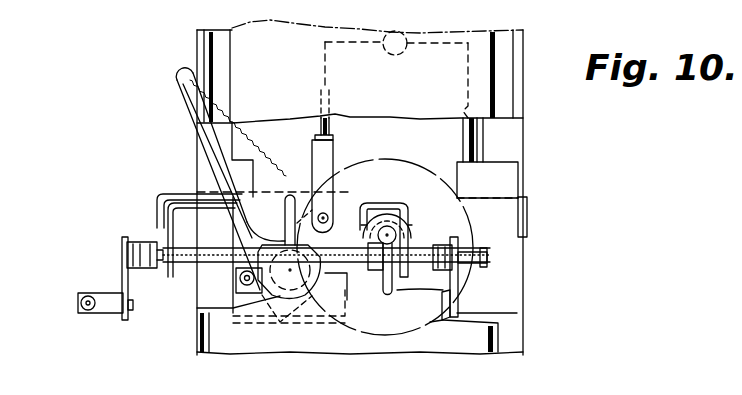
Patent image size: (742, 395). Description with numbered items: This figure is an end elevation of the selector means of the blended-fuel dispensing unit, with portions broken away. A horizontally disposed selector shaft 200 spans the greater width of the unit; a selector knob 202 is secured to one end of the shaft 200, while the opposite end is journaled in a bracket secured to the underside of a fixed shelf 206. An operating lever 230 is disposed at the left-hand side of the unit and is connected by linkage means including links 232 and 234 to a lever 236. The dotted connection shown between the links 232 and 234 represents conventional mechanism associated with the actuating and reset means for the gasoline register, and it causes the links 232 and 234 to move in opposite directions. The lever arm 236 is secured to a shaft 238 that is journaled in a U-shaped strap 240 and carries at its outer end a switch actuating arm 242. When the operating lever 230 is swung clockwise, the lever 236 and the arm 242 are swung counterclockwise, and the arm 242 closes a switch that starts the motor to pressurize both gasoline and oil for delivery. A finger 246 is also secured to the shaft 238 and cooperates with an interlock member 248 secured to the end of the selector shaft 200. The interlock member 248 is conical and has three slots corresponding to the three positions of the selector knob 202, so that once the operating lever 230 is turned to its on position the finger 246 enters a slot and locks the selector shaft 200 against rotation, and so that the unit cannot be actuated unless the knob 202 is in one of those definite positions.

The ball stud 200 is at (382, 195).
The base 202 is at (430, 328).
The housing circle 206 is at (396, 202).
The hand lever 230 is at (177, 99).
The actuating rod 232 is at (318, 122).
The guide rod 234 is at (463, 135).
The bracket 236 is at (457, 313).
The plate 238 is at (485, 272).
The clamp bracket 240 is at (412, 203).
The stop cylinder 242 is at (121, 283).
The cam pivot 246 is at (350, 268).
The cup seat 248 is at (406, 221).